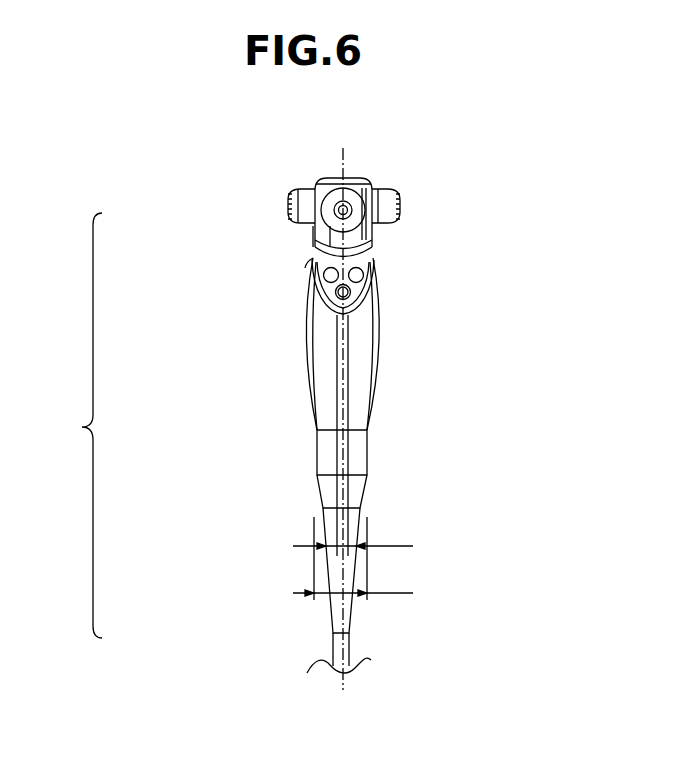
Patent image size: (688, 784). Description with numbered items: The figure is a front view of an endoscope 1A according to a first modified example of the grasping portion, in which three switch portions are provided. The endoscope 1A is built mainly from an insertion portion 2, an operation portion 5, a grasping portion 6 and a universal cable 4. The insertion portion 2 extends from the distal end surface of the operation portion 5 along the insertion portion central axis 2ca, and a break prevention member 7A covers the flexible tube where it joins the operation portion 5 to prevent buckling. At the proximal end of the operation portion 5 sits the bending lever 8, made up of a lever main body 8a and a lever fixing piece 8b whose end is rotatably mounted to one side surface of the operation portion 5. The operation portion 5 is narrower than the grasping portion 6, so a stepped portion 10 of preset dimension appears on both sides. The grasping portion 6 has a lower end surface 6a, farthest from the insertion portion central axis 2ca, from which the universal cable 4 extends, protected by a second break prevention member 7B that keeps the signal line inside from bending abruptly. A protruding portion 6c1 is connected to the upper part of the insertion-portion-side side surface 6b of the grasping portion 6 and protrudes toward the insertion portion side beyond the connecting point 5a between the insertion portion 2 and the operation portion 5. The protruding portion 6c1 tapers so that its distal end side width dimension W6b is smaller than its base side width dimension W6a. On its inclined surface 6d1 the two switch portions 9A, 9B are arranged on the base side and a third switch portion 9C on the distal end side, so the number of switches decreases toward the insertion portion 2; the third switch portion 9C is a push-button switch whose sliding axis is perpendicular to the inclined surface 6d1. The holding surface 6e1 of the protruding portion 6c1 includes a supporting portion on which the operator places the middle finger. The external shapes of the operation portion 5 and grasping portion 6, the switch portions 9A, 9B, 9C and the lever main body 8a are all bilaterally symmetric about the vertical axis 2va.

The endoscope 1A is at (77, 425).
The insertion portion 2 is at (313, 243).
The vertical axis 2va is at (342, 160).
The insertion portion central axis 2ca is at (340, 208).
The universal cable 4 is at (330, 650).
The operation portion 5 is at (305, 255).
The connecting point 5a is at (372, 248).
The grasping portion 6 is at (286, 445).
The lower end surface 6a is at (352, 435).
The insertion-portion-side side surface 6b is at (352, 360).
The protruding portion 6c1 is at (385, 309).
The inclined surface 6d1 is at (376, 260).
The holding surface 6e1 is at (352, 320).
The break prevention member 7A is at (323, 220).
The break prevention member 7B is at (304, 520).
The bending lever 8 is at (396, 194).
The lever main body 8a is at (400, 210).
The lever fixing piece 8b is at (380, 228).
The switch portion 9A is at (325, 281).
The switch portion 9B is at (364, 278).
The third switch portion 9C is at (336, 303).
The stepped portion 10 is at (335, 219).
The base side width dimension W6a is at (361, 585).
The distal end side width dimension W6b is at (361, 558).